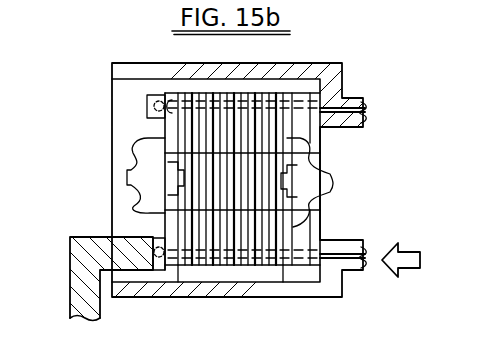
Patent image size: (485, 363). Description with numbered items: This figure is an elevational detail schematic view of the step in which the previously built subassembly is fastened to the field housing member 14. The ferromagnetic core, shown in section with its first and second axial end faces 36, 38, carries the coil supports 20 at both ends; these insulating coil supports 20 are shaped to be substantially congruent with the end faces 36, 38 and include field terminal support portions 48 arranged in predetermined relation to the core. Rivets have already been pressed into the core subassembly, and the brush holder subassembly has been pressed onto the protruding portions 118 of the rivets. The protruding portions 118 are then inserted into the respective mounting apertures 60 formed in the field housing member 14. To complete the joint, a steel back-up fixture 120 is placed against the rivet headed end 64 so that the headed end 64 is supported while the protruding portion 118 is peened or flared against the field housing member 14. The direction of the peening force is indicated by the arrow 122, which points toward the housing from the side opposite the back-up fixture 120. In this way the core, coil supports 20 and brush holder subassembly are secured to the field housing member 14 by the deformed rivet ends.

The field housing member 14 is at (347, 126).
The coil supports 20 is at (173, 98).
The first axial end face 36 is at (278, 268).
The second axial end face 38 is at (182, 268).
The field terminal support portions 48 is at (150, 94).
The mounting apertures 60 is at (366, 110).
The rivet headed end 64 is at (147, 106).
The protruding portions of the rivets 118 is at (348, 100).
The steel back-up fixture 120 is at (88, 252).
The arrow 122 is at (393, 245).